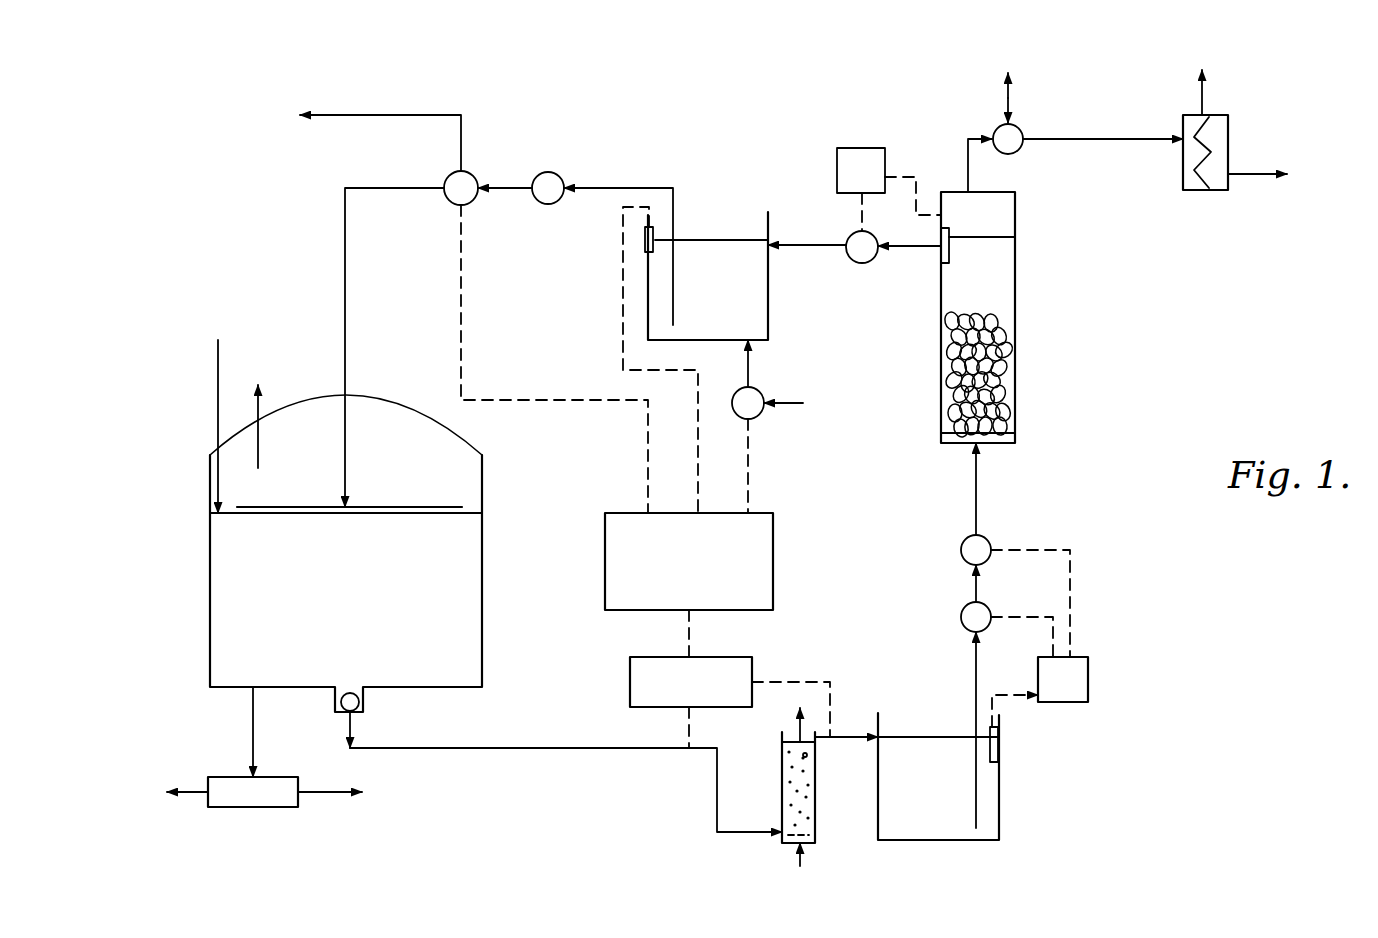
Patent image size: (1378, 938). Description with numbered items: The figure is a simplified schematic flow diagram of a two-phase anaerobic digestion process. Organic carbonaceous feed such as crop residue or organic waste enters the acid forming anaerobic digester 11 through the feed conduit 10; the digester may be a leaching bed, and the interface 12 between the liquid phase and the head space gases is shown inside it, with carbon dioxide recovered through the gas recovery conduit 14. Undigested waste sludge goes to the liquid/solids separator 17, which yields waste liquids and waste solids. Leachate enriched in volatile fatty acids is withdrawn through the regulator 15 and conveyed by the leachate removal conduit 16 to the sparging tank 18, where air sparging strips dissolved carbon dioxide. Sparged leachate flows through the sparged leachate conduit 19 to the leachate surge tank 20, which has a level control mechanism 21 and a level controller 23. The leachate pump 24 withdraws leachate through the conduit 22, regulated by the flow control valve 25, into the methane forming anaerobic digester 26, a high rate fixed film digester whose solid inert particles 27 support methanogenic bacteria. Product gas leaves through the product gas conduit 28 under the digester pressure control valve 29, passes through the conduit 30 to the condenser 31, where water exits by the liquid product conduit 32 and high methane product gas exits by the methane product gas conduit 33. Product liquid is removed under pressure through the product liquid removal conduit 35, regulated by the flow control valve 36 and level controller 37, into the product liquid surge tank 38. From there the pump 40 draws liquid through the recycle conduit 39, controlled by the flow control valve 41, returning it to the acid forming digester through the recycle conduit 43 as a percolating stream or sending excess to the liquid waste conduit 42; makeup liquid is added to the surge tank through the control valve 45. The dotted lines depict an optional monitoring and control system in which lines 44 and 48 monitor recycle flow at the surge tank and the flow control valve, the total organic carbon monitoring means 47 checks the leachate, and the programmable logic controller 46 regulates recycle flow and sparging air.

The feed conduit 10 is at (218, 407).
The acid forming anaerobic digester 11 is at (208, 587).
The interface between liquid phase and head space gases 12 is at (473, 513).
The gas recovery conduit 14 is at (262, 400).
The regulator 15 is at (335, 712).
The leachate removal conduit 16 is at (590, 750).
The liquid/solids separator 17 is at (228, 775).
The sparging tank 18 is at (815, 792).
The sparged leachate conduit 19 is at (846, 737).
The leachate surge tank 20 is at (999, 813).
The level control mechanism 21 is at (998, 745).
The conduit 22 is at (975, 683).
The level controller 23 is at (1090, 672).
The leachate pump 24 is at (960, 616).
The flow control valve 25 is at (960, 546).
The methane forming anaerobic digester 26 is at (1016, 405).
The solid inert particles 27 is at (1005, 352).
The product gas conduit 28 is at (968, 146).
The digester pressure control valve 29 is at (1015, 152).
The conduit 30 is at (1097, 139).
The condenser 31 is at (1228, 128).
The liquid product conduit 32 is at (1257, 174).
The methane product gas conduit 33 is at (1202, 93).
The product liquid removal conduit 35 is at (913, 250).
The flow control valve 36 is at (862, 263).
The level controller 37 is at (862, 148).
The methane forming digester product liquid surge tank 38 is at (768, 307).
The recycle conduit 39 is at (675, 183).
The pump 40 is at (560, 175).
The flow control valve 41 is at (470, 173).
The liquid waste conduit 42 is at (461, 115).
The recycle conduit 43 is at (345, 222).
The monitoring and control line 44 is at (623, 258).
The control valve 45 is at (760, 390).
The programmable logic controller 46 is at (689, 585).
The automatic total organic carbon monitoring means 47 is at (730, 702).
The monitoring and control line 48 is at (547, 400).